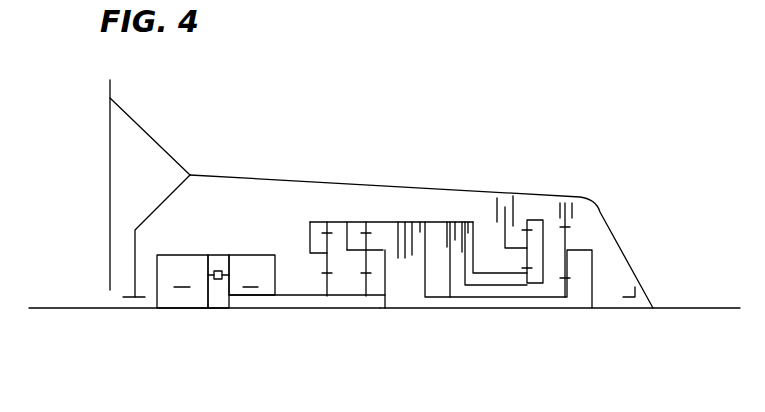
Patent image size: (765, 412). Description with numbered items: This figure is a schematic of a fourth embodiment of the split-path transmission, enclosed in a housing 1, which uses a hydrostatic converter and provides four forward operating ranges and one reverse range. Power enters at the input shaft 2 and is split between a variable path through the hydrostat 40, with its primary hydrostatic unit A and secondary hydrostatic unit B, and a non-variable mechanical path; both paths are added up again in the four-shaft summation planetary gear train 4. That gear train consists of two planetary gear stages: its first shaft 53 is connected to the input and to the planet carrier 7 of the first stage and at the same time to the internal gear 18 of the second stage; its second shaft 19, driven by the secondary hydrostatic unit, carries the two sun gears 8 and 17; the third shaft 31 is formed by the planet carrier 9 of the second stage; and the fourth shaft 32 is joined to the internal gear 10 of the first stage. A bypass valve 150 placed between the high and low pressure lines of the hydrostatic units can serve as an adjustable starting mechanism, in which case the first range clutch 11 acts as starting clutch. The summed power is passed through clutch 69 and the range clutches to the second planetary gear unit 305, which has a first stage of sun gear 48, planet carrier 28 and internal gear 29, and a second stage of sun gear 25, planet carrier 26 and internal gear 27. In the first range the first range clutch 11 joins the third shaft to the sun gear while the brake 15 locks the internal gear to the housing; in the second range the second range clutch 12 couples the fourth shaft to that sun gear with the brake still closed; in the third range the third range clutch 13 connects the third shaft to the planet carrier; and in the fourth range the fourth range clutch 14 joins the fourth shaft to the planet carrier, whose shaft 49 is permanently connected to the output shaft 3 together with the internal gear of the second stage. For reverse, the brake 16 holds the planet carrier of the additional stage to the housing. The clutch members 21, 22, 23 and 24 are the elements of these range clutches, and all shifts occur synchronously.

The housing 1 is at (163, 145).
The input shaft 2 is at (55, 308).
The output shaft 3 is at (650, 308).
The summation planetary gear train 4 is at (309, 158).
The planet carrier 7 is at (360, 250).
The sun gear 8 is at (363, 282).
The planet carrier 9 is at (306, 233).
The internal gear 10 is at (347, 222).
The first range clutch 11 is at (455, 228).
The second range clutch 12 is at (425, 228).
The third range clutch 13 is at (510, 240).
The fourth range clutch 14 is at (405, 222).
The clutch or brake for starting range 15 is at (573, 198).
The clutch reverse range 16 is at (513, 225).
The sun gear 17 is at (323, 277).
The internal gear 18 is at (327, 222).
The shaft 19 is at (297, 295).
The clutch member 21 is at (456, 278).
The clutch member 22 is at (410, 280).
The clutch member 23 is at (475, 278).
The clutch member 24 is at (405, 277).
The sun gear 25 is at (537, 285).
The planet carrier 26 is at (537, 220).
The internal gear 27 is at (556, 213).
The planet carrier 28 is at (590, 249).
The internal gear 29 is at (576, 223).
The third shaft 31 is at (366, 222).
The fourth shaft 32 is at (387, 225).
The hydrostat 40 is at (201, 162).
The sun gear 48 is at (568, 283).
The shaft 49 is at (557, 309).
The first shaft 53 is at (260, 308).
The clutch 69 is at (442, 322).
The bypass valve 150 is at (218, 271).
The second planetary gear unit 305 is at (618, 330).